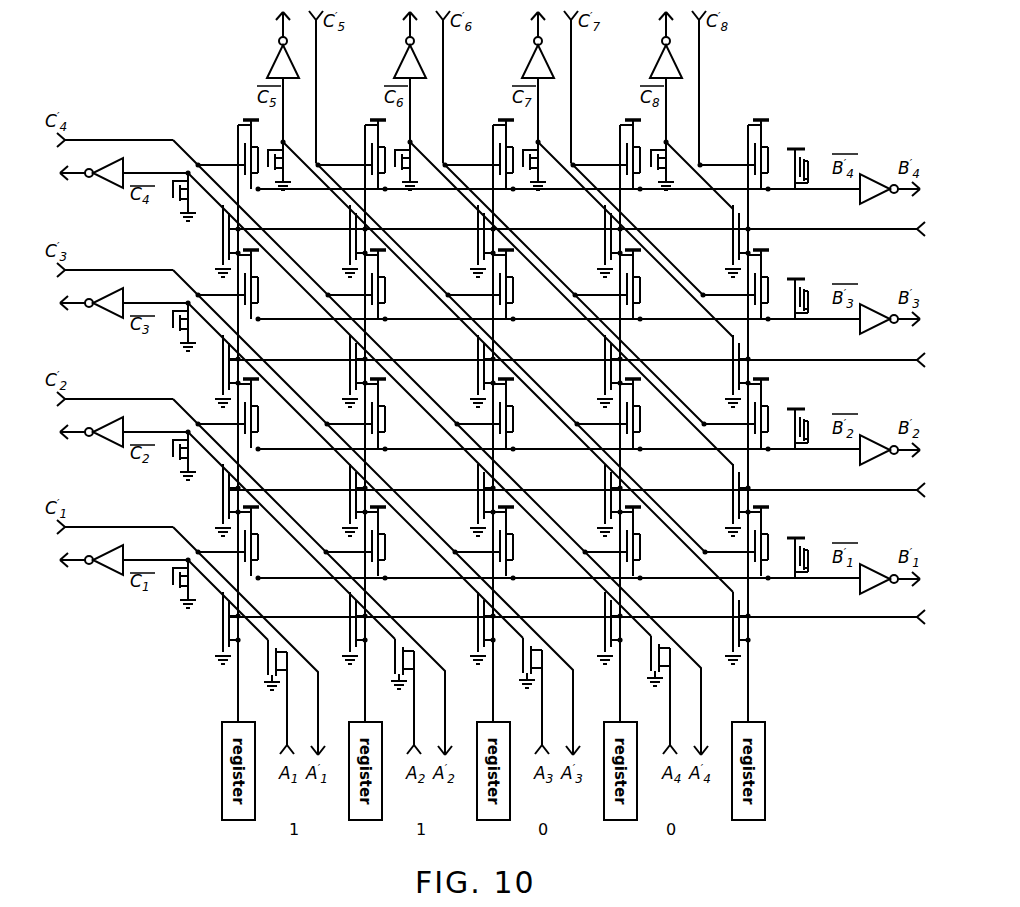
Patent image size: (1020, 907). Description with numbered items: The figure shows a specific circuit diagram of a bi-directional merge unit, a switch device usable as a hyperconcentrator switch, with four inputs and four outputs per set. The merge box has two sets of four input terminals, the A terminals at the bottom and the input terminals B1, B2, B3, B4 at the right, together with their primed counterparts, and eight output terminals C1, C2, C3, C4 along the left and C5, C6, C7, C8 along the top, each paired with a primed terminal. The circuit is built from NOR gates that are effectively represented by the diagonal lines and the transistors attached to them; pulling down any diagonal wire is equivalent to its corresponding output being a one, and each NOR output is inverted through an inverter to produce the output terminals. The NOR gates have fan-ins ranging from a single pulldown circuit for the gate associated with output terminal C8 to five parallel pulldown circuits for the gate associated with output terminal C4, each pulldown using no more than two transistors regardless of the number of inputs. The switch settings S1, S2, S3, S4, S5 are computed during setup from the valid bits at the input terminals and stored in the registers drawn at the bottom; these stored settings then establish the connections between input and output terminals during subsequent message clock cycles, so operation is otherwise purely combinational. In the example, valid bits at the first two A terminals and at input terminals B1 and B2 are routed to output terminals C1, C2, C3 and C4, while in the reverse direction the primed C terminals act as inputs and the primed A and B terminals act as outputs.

The switch setting S1 is at (234, 472).
The switch setting S2 is at (361, 472).
The switch setting S3 is at (489, 472).
The switch setting S4 is at (616, 472).
The switch setting S5 is at (744, 472).
The output terminal C1 is at (116, 569).
The output terminal C2 is at (116, 441).
The output terminal C3 is at (116, 312).
The output terminal C4 is at (116, 182).
The output terminal C5 is at (271, 76).
The output terminal C6 is at (398, 76).
The output terminal C7 is at (526, 76).
The output terminal C8 is at (654, 76).
The input terminal B1 is at (583, 629).
The input terminal B2 is at (583, 502).
The input terminal B3 is at (583, 372).
The input terminal B4 is at (583, 241).